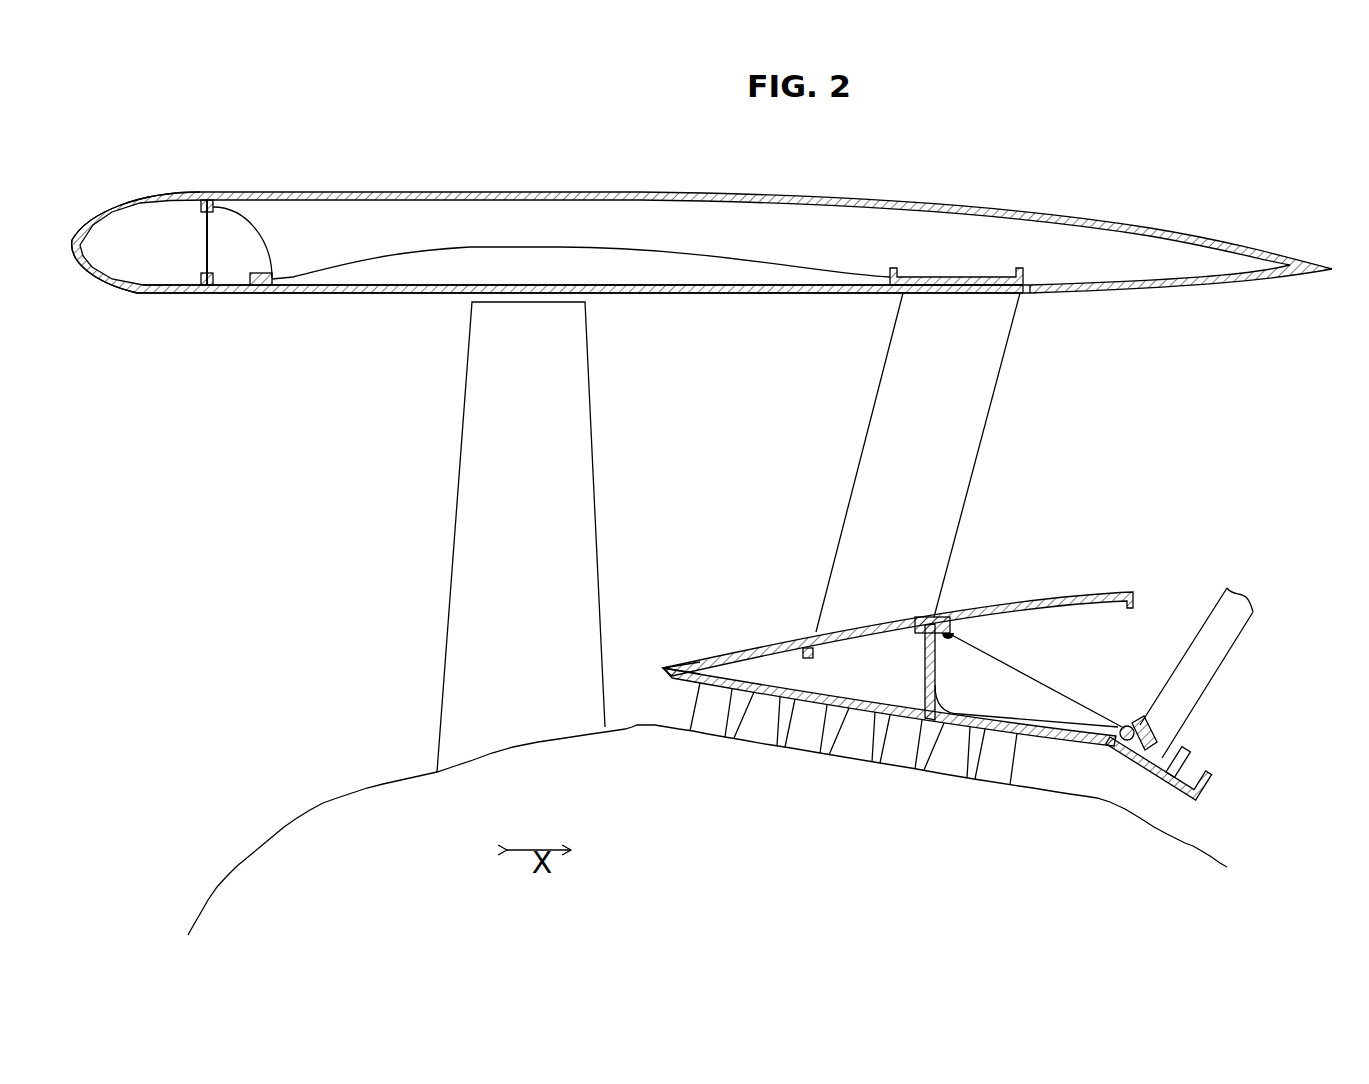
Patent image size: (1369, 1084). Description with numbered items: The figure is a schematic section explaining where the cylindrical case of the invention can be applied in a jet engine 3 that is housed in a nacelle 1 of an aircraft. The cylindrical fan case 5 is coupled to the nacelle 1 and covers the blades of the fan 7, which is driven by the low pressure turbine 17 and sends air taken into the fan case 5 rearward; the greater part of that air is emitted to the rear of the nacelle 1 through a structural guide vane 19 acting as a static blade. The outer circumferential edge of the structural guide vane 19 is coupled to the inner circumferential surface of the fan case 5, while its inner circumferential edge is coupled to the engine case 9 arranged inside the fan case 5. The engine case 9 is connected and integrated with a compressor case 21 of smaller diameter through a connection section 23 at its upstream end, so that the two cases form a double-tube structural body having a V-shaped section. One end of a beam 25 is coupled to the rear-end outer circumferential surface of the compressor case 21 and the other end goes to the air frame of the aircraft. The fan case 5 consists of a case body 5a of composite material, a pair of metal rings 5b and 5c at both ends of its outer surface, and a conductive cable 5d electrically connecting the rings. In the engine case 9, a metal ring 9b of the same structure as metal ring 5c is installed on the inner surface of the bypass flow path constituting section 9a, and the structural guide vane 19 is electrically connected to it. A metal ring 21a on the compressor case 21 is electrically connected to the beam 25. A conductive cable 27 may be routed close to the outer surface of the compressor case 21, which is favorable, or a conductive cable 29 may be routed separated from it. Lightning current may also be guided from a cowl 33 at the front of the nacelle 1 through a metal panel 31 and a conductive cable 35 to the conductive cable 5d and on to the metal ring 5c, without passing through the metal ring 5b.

The nacelle 1 is at (527, 190).
The jet engine 3 is at (336, 688).
The fan case 5 is at (332, 314).
The case body 5a is at (697, 295).
The metal ring 5b is at (237, 276).
The metal ring 5c is at (957, 277).
The conductive cable 5d is at (573, 245).
The fan 7 is at (454, 496).
The engine case 9 is at (759, 633).
The bypass flow path constituting section 9a is at (1068, 592).
The metal ring 9b is at (878, 642).
The low pressure turbine 17 is at (682, 709).
The structural guide vane 19 is at (985, 366).
The compressor case 21 is at (1108, 755).
The metal ring 21a is at (1135, 724).
The connection section 23 is at (661, 664).
The beam 25 is at (1200, 683).
The conductive cable 27 is at (1028, 712).
The conductive cable 29 is at (1090, 713).
The metal panel 31 is at (206, 242).
The cowl 33 is at (110, 218).
The conductive cable 35 is at (255, 223).